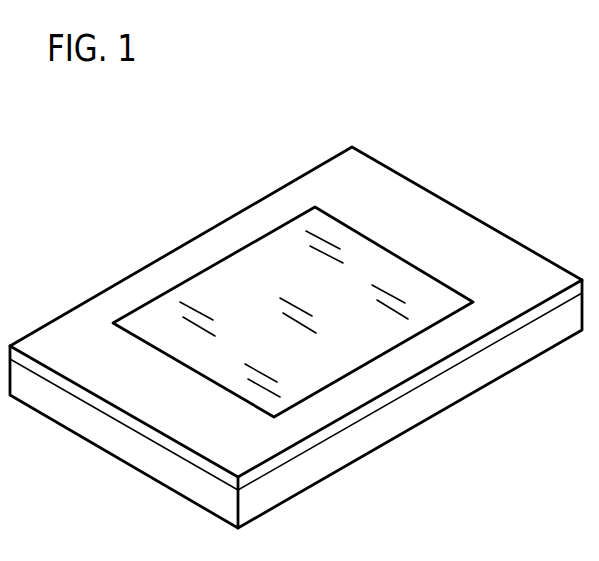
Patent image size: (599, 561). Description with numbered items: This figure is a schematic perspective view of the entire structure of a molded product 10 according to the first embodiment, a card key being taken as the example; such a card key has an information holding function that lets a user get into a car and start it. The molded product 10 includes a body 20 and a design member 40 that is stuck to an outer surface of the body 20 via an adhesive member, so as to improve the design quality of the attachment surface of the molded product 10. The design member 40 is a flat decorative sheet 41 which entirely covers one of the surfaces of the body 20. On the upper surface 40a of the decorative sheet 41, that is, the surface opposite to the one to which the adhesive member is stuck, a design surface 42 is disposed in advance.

The molded product 10 is at (211, 124).
The body 20 is at (77, 453).
The design member 40 is at (296, 312).
The upper surface 40a is at (405, 190).
The decorative sheet 41 is at (217, 225).
The design surface 42 is at (363, 343).